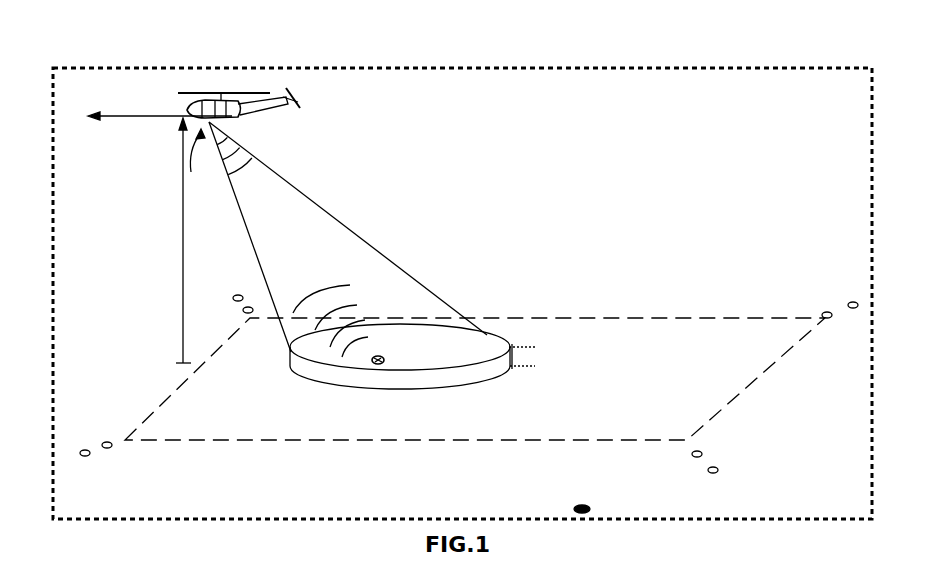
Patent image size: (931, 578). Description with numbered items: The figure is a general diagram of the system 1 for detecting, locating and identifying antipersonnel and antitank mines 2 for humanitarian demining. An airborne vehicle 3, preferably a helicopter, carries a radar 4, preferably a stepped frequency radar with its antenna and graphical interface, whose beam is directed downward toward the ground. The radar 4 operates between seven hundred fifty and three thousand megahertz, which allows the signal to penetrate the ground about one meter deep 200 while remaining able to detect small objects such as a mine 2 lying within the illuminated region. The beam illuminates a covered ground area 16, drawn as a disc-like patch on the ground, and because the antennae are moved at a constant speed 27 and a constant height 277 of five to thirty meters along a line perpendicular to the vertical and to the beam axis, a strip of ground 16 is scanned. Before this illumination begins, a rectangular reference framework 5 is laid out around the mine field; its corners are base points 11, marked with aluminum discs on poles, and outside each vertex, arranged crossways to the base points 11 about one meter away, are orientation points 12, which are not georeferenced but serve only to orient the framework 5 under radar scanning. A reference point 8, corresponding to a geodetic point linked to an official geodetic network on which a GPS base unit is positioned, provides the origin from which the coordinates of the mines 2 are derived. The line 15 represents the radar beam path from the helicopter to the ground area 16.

The system for detecting, locating and identifying mines 1 is at (463, 68).
The mine 2 is at (385, 357).
The airborne vehicle 3 is at (298, 128).
The radar 4 is at (199, 158).
The reference framework 5 is at (648, 318).
The reference point 8 is at (588, 502).
The base point 11 is at (236, 296).
The orientation point 12 is at (244, 313).
The measurement beam line 15 is at (365, 232).
The covered ground area 16 is at (481, 346).
The constant speed 27 is at (160, 109).
The ground penetration depth 200 is at (537, 356).
The height 277 is at (167, 240).